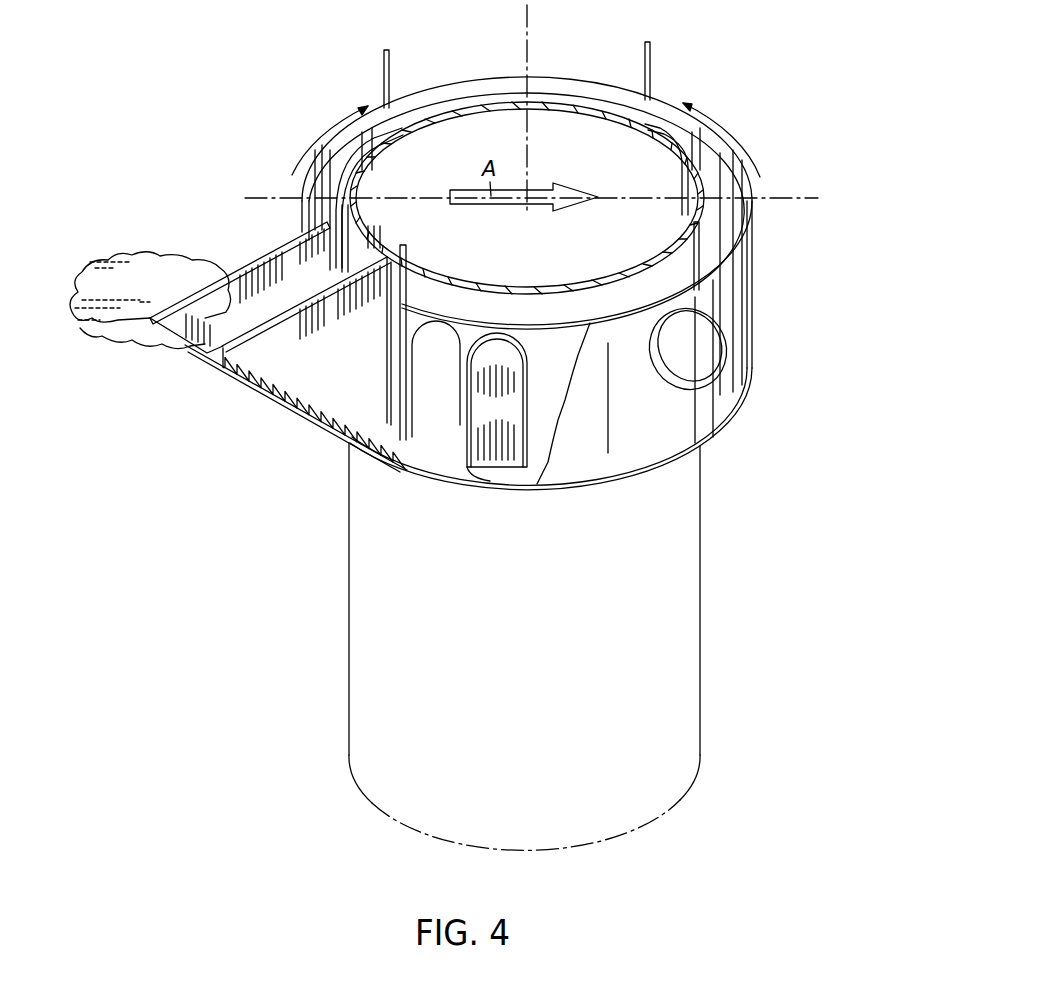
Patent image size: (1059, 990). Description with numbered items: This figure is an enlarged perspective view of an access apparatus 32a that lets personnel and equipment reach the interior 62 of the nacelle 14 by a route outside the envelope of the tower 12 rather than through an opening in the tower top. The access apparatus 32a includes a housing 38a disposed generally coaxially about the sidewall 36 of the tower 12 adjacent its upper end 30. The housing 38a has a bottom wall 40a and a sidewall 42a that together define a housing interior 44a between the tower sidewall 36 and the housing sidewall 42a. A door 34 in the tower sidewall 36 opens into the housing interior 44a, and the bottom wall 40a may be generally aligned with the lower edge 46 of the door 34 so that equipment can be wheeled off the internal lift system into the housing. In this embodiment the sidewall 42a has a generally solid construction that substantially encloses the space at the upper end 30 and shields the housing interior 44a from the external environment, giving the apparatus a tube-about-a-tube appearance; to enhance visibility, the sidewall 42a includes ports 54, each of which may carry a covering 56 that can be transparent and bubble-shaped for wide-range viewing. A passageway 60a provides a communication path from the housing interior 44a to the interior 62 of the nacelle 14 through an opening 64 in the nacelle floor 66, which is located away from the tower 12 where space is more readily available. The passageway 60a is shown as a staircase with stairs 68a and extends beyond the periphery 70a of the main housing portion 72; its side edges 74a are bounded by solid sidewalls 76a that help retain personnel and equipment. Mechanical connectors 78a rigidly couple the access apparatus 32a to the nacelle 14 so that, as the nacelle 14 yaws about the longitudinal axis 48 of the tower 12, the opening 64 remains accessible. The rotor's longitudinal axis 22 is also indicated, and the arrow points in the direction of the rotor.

The tower 12 is at (348, 700).
The nacelle 14 is at (146, 250).
The longitudinal axis 22 is at (278, 194).
The upper end 30 is at (478, 121).
The access apparatus 32a is at (745, 63).
The door 34 is at (531, 380).
The sidewall 36 is at (450, 106).
The housing 38a is at (764, 250).
The bottom wall 40a is at (722, 437).
The sidewall 42a is at (754, 326).
The housing interior 44a is at (540, 391).
The lower edge 46 is at (480, 481).
The longitudinal axis 48 is at (529, 15).
The port 54 is at (406, 129).
The covering 56 is at (728, 342).
The passageway 60a is at (278, 348).
The interior 62 is at (189, 236).
The opening 64 is at (227, 283).
The floor 66 is at (152, 292).
The stairs 68a is at (238, 380).
The periphery 70a is at (402, 474).
The main housing portion 72 is at (583, 86).
The side edges 74a is at (330, 426).
The sidewall 76a is at (299, 286).
The mechanical connectors 78a is at (383, 65).